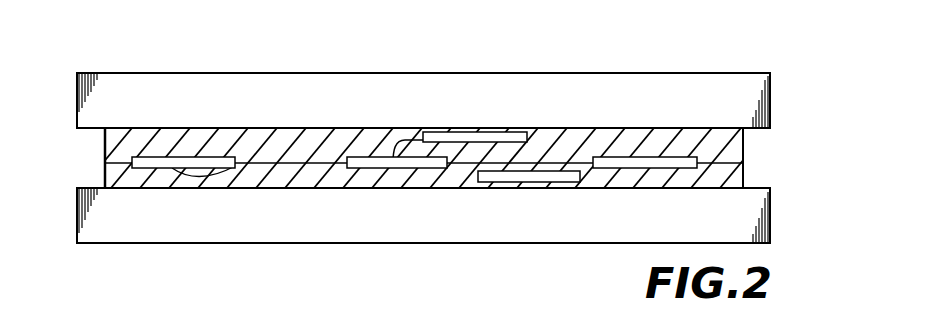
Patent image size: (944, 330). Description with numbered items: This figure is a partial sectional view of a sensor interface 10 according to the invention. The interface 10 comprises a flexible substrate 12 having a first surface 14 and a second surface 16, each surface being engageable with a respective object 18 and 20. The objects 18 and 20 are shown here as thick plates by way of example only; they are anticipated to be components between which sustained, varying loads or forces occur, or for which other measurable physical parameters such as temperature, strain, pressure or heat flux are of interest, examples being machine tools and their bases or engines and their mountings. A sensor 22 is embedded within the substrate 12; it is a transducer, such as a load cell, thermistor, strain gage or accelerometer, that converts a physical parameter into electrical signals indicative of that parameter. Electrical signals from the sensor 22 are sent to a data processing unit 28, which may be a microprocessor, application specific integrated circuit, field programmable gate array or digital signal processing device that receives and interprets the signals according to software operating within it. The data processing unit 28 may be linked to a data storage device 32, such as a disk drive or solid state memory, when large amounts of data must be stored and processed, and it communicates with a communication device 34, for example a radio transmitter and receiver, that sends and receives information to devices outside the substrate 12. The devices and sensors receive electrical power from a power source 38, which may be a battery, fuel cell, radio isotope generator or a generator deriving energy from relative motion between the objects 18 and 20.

The sensor interface 10 is at (783, 157).
The flexible substrate 12 is at (104, 149).
The first surface 14 is at (643, 127).
The second surface 16 is at (586, 188).
The object 18 is at (566, 82).
The object 20 is at (448, 230).
The sensor 22 is at (167, 169).
The data processing unit 28 is at (357, 169).
The data storage device 32 is at (457, 131).
The communication device 34 is at (633, 169).
The power source 38 is at (519, 183).